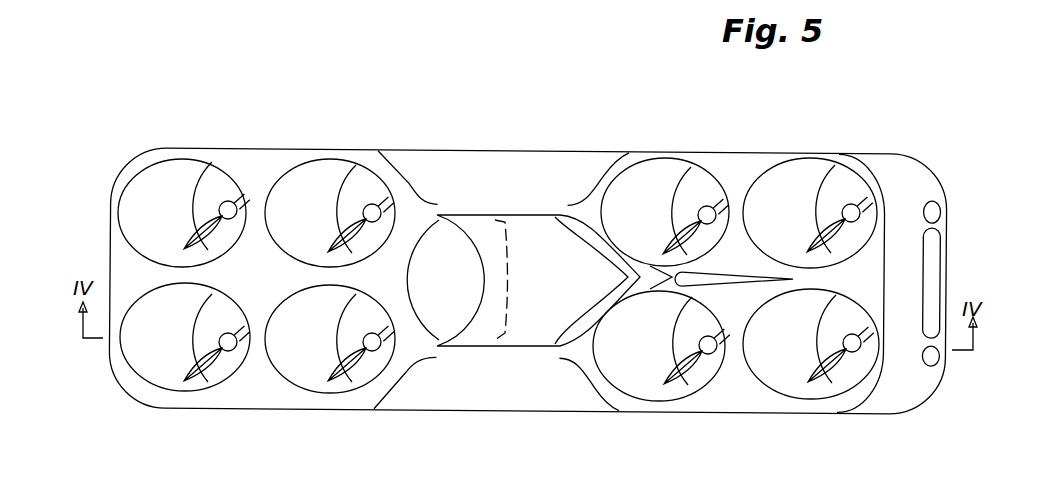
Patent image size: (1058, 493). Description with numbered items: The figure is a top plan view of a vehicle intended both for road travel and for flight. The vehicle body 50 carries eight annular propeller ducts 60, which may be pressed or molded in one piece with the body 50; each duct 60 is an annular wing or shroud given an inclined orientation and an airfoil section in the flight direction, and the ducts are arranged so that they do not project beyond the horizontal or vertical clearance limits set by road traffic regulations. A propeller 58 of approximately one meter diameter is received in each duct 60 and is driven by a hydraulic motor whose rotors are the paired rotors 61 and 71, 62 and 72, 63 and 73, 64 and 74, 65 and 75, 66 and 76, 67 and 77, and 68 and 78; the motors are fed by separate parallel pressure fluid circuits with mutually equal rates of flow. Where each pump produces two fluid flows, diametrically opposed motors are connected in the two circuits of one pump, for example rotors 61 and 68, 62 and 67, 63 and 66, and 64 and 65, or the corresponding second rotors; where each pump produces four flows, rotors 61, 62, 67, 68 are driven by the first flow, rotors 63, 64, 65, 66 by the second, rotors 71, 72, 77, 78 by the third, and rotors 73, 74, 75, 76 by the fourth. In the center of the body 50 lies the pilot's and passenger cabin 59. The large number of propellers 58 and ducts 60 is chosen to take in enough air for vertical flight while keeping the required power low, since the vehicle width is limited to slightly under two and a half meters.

The vehicle body 50 is at (890, 185).
The propeller 58 is at (198, 222).
The pilot's and passenger cabin 59 is at (475, 237).
The propeller duct 60 is at (170, 182).
The rotor 61 is at (227, 201).
The rotor 62 is at (230, 352).
The rotor 63 is at (370, 204).
The rotor 64 is at (378, 353).
The rotor 65 is at (707, 206).
The rotor 66 is at (708, 355).
The rotor 67 is at (852, 204).
The rotor 68 is at (852, 354).
The rotor 71 is at (213, 172).
The rotor 72 is at (219, 410).
The rotor 73 is at (350, 174).
The rotor 74 is at (375, 415).
The rotor 75 is at (698, 173).
The rotor 76 is at (696, 242).
The rotor 77 is at (844, 160).
The rotor 78 is at (843, 417).